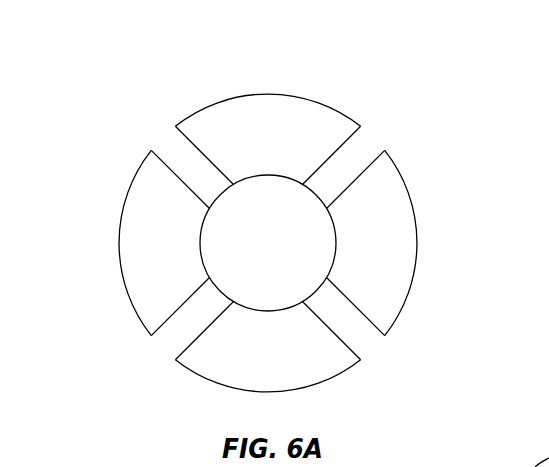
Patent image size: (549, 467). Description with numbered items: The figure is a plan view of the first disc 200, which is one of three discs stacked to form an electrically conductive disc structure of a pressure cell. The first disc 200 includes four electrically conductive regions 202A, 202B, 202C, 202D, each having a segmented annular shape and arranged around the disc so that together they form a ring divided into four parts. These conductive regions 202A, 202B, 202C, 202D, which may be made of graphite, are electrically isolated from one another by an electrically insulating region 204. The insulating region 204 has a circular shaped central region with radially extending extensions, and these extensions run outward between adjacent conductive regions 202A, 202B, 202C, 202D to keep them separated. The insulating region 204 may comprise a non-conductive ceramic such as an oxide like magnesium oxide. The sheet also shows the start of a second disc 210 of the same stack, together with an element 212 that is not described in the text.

The first disc 200 is at (265, 227).
The electrically conductive region 202A is at (295, 121).
The electrically conductive region 202B is at (385, 243).
The electrically conductive region 202C is at (222, 361).
The electrically conductive region 202D is at (152, 237).
The electrically insulating region 204 is at (285, 249).
The second disc 210 is at (528, 445).
The tool 212 is at (486, 462).